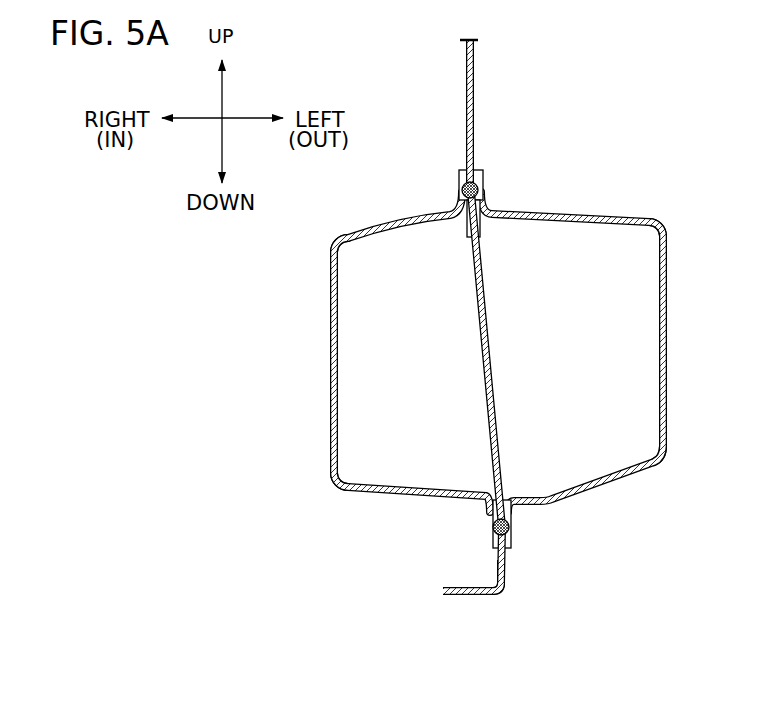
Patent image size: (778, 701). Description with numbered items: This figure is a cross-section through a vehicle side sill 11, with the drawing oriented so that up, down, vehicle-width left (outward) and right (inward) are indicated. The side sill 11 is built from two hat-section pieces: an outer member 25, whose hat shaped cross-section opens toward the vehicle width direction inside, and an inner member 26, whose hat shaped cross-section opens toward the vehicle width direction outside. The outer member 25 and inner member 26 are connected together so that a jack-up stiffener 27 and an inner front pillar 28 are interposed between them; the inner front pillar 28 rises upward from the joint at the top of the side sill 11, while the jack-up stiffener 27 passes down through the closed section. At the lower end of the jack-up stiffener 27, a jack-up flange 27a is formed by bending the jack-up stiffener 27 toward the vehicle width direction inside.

The side sill 11 is at (597, 212).
The outer member 25 is at (667, 302).
The inner member 26 is at (331, 363).
The jack-up stiffener 27 is at (493, 361).
The jack-up flange 27a is at (467, 598).
The inner front pillar 28 is at (473, 92).